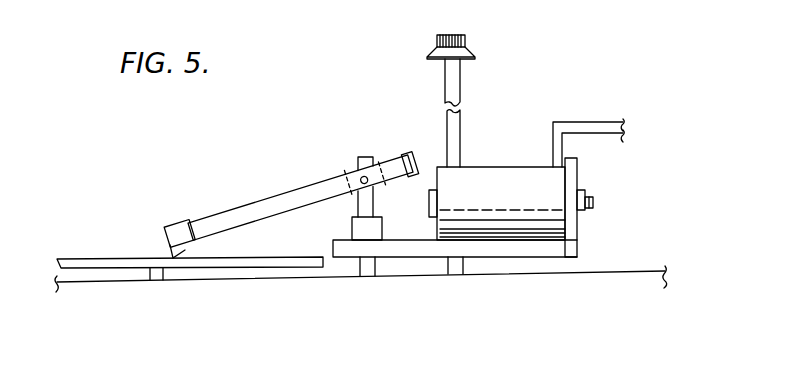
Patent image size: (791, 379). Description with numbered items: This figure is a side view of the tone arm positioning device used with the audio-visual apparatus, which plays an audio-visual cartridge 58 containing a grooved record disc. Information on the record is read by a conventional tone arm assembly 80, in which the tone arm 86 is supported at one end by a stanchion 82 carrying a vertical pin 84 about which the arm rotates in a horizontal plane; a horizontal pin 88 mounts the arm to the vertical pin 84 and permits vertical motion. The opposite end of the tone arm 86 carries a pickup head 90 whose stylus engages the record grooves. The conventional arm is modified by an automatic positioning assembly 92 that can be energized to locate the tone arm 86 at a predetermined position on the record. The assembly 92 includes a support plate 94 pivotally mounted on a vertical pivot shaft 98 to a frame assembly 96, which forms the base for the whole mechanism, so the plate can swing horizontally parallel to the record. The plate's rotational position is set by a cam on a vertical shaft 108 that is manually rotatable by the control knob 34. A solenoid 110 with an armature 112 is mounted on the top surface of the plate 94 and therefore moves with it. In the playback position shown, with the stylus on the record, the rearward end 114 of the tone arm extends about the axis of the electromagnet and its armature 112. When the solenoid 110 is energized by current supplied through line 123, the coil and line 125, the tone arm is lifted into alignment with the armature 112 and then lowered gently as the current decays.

The control knob 34 is at (472, 48).
The audio-visual cartridge 58 is at (88, 259).
The tone arm assembly 80 is at (292, 182).
The stanchion 82 is at (374, 228).
The vertical pin 84 is at (361, 205).
The tone arm 86 is at (300, 197).
The horizontal pin 88 is at (364, 177).
The pickup head 90 is at (179, 234).
The automatic positioning assembly 92 is at (534, 182).
The support plate 94 is at (521, 247).
The frame assembly 96 is at (414, 272).
The vertical pivot shaft 98 is at (363, 263).
The vertical shaft 108 is at (461, 80).
The solenoid 110 is at (555, 217).
The armature 112 is at (432, 202).
The rearward end 114 is at (409, 164).
The line 123 is at (603, 120).
The line 125 is at (607, 137).